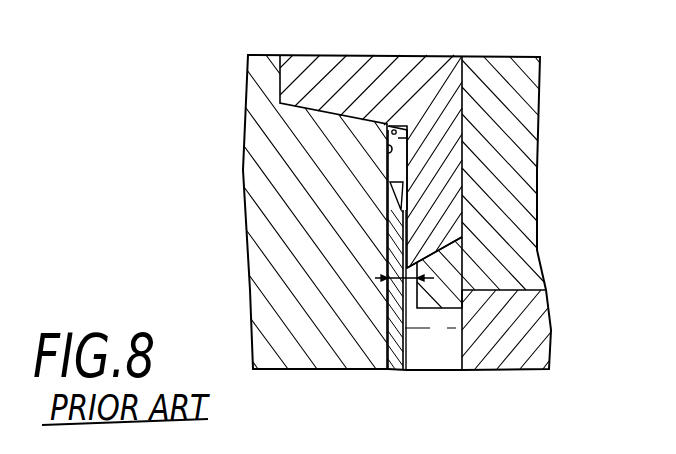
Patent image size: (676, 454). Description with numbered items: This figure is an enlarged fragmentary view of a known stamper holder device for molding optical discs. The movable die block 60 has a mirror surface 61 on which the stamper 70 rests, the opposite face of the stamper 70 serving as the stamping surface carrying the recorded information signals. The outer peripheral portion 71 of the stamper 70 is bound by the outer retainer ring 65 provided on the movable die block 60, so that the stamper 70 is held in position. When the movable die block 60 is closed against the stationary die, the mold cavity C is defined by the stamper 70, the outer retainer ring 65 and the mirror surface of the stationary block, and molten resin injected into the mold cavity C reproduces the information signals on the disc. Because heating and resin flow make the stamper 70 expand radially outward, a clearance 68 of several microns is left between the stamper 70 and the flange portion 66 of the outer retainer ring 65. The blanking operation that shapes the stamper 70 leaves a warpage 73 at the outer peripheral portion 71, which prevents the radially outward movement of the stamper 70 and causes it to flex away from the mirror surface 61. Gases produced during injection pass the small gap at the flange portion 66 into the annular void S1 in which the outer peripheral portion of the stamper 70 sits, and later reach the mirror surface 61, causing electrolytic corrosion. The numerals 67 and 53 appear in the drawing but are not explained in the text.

The movable die block 60 is at (262, 73).
The outer retainer ring 65 is at (338, 85).
The gate insert 67 is at (397, 128).
The mirror surface 61 is at (389, 150).
The warpage 73 is at (396, 185).
The outer peripheral portion 71 is at (398, 238).
The stamper 70 is at (389, 320).
The annular void S1 is at (398, 165).
The flange portion 66 is at (428, 230).
The core block 53 is at (437, 310).
The clearance 68 is at (404, 370).
The mold cavity C is at (443, 352).